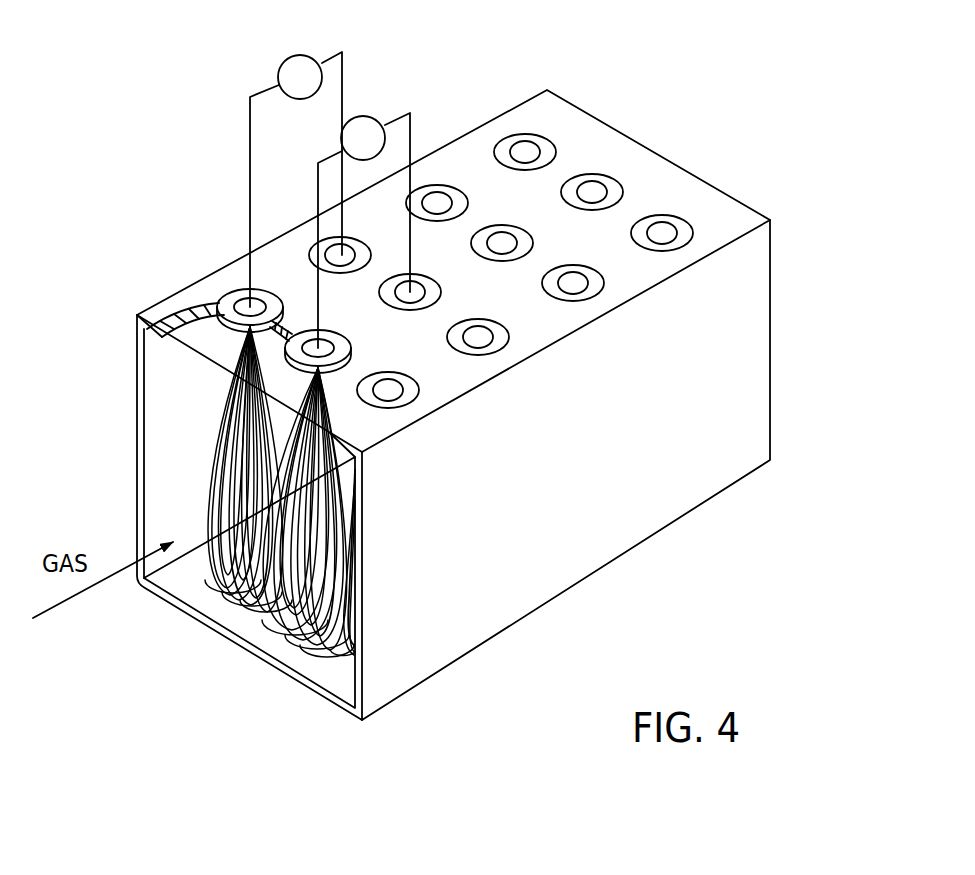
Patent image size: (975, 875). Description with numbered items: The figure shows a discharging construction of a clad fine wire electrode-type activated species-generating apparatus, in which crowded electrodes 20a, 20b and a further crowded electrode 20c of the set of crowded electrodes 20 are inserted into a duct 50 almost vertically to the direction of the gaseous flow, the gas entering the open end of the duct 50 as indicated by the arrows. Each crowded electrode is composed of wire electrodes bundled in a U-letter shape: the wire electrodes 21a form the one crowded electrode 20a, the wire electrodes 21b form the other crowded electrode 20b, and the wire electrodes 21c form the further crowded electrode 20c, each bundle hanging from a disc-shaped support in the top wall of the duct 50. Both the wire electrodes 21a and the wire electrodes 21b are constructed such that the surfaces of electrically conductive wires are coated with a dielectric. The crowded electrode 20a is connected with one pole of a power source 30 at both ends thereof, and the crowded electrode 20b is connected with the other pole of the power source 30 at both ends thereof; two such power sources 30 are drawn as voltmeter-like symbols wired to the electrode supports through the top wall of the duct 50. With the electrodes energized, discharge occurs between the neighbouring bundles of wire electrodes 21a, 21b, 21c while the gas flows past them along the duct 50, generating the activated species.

The duct 50 is at (770, 335).
The power source 30 is at (283, 62).
The wire electrodes 21a is at (222, 386).
The wire electrodes 21b is at (300, 398).
The third electrode support 21c is at (360, 487).
The filament electrodes 20 is at (233, 607).
The crowded electrode 20a is at (195, 577).
The crowded electrode 20b is at (268, 637).
The third filament bundle 20c is at (340, 655).